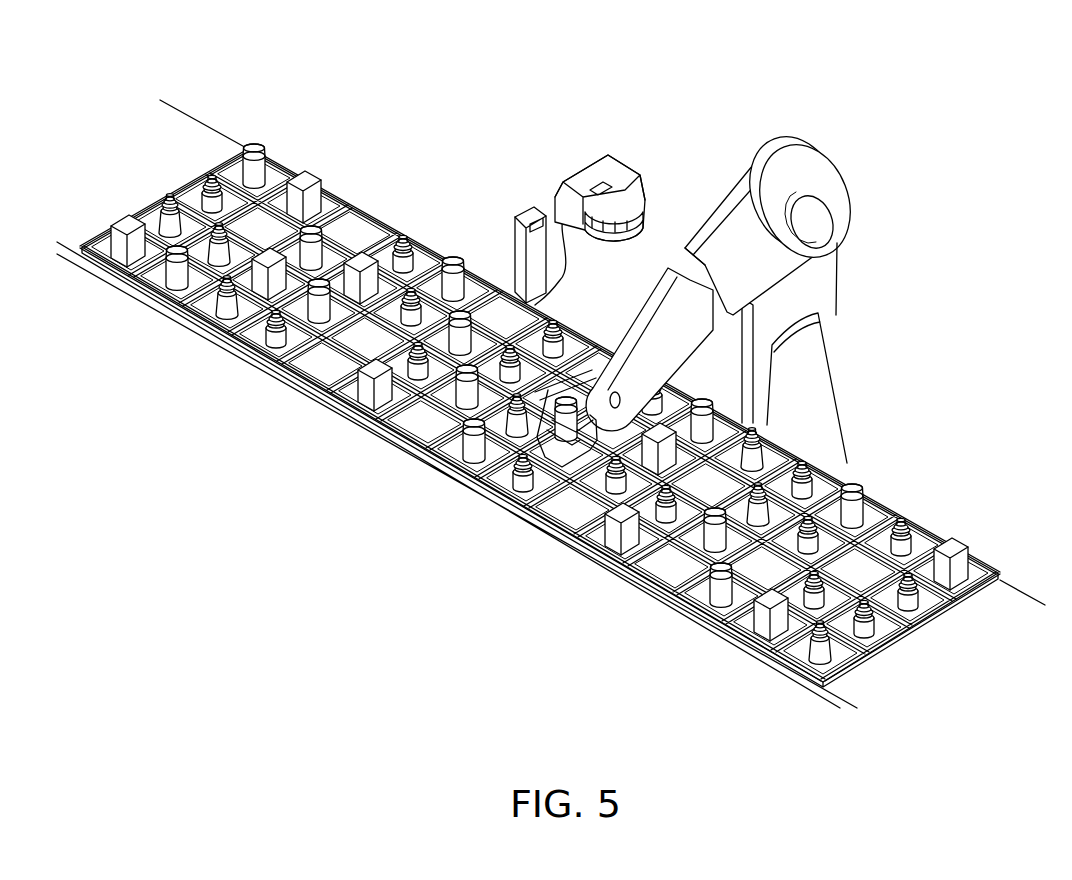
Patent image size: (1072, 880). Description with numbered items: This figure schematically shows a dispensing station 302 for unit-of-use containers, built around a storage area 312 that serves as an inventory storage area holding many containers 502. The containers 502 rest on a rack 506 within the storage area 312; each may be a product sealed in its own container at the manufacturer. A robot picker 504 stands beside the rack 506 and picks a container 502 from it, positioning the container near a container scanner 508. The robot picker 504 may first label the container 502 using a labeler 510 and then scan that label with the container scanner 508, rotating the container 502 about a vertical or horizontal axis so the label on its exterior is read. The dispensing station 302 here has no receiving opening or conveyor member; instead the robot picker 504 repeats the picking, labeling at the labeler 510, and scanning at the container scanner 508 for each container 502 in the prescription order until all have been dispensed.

The dispensing station 302 is at (551, 367).
The storage area 312 is at (272, 378).
The container 502 is at (314, 178).
The robot picker 504 is at (848, 175).
The rack 506 is at (250, 343).
The container scanner 508 is at (527, 210).
The labeler 510 is at (620, 165).